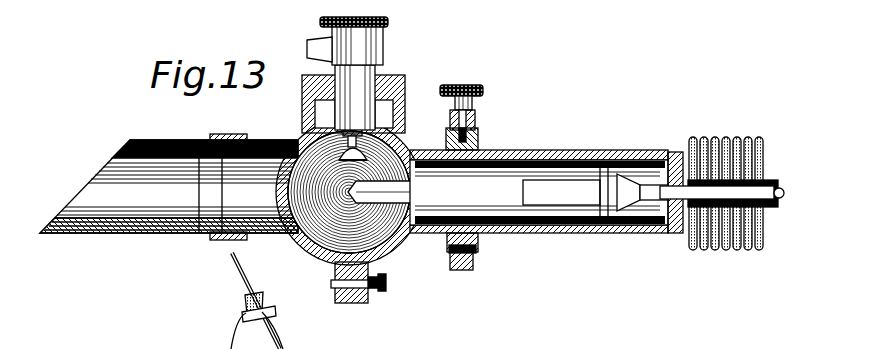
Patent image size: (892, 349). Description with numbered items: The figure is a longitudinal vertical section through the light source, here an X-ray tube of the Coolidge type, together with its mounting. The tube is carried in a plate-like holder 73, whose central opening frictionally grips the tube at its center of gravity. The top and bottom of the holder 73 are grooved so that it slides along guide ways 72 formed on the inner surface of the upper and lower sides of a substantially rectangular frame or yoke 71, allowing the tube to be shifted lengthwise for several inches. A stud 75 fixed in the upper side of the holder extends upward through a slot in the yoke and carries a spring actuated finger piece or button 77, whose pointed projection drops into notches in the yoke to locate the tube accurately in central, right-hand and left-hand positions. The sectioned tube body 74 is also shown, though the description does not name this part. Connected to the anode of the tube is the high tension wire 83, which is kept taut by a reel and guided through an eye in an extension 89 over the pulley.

The frame or yoke 71 is at (478, 126).
The guide ways 72 is at (450, 248).
The plate-like holder 73 is at (480, 244).
The barrel / cylinder 74 is at (535, 152).
The stud 75 is at (450, 118).
The spring actuated finger piece or button 77 is at (480, 93).
The high tension wire 83 is at (247, 262).
The extension 89 is at (276, 309).